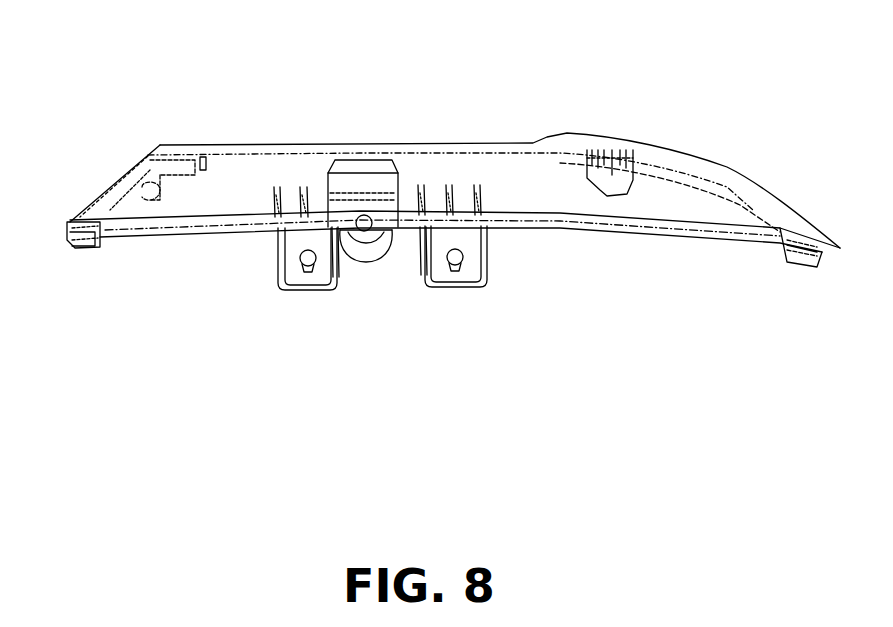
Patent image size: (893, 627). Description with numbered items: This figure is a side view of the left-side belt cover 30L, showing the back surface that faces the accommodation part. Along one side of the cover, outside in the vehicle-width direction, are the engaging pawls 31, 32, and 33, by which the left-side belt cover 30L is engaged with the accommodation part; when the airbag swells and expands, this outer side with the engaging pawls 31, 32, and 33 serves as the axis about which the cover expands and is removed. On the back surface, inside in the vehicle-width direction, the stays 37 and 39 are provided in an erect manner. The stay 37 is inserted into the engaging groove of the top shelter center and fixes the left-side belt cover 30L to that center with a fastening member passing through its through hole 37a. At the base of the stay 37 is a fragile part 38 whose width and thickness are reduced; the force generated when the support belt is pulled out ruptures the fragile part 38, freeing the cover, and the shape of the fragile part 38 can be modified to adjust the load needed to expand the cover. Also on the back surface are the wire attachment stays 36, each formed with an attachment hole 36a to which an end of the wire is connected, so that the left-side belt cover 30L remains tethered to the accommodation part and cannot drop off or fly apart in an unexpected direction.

The left-side belt cover 30L is at (434, 118).
The engaging pawl 31 is at (97, 247).
The engaging pawl 32 is at (387, 253).
The engaging pawl 33 is at (800, 267).
The wire attachment stay 36 is at (290, 280).
The attachment hole 36a is at (312, 270).
The stay 37 is at (388, 242).
The through hole 37a is at (363, 232).
The fragile part 38 is at (332, 168).
The stay 39 is at (640, 172).